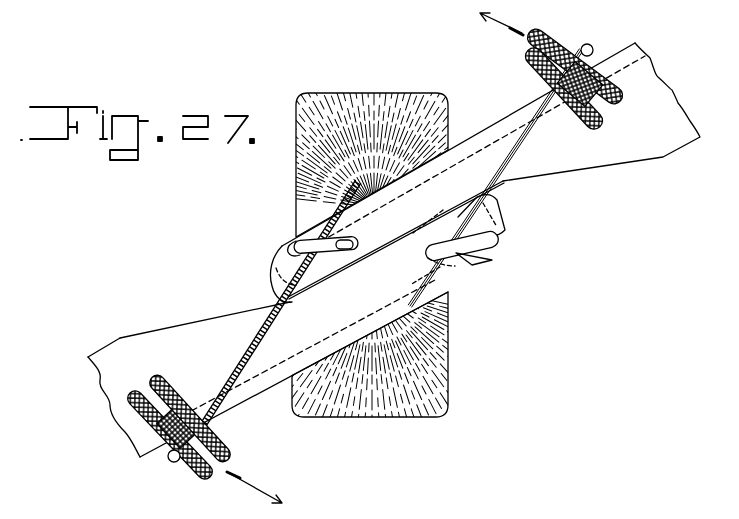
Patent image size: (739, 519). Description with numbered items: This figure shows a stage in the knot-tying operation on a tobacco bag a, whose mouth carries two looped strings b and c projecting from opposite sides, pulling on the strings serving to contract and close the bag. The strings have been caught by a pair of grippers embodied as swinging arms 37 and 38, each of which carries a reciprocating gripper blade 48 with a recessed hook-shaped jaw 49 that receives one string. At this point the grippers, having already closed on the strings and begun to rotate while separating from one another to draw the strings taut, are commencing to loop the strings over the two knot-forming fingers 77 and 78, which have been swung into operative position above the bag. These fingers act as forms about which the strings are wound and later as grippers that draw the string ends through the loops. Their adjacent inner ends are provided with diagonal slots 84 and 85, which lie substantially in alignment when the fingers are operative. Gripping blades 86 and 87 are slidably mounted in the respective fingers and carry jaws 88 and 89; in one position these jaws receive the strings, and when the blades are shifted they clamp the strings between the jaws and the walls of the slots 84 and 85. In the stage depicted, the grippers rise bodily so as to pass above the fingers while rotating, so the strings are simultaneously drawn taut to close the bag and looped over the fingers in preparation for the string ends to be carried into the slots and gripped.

The gripper arm 37 is at (560, 58).
The gripper arm 38 is at (214, 436).
The gripper blade 48 is at (597, 100).
The hook-shaped jaw 49 is at (548, 52).
The knot-forming finger 77 is at (174, 334).
The knot-forming finger 78 is at (560, 160).
The slot 84 is at (460, 260).
The slot 85 is at (297, 238).
The gripping blade 86 is at (430, 256).
The gripping blade 87 is at (358, 246).
The jaw 88 is at (472, 252).
The jaw 89 is at (290, 249).
The bag a is at (378, 110).
The string b is at (517, 144).
The string c is at (248, 352).